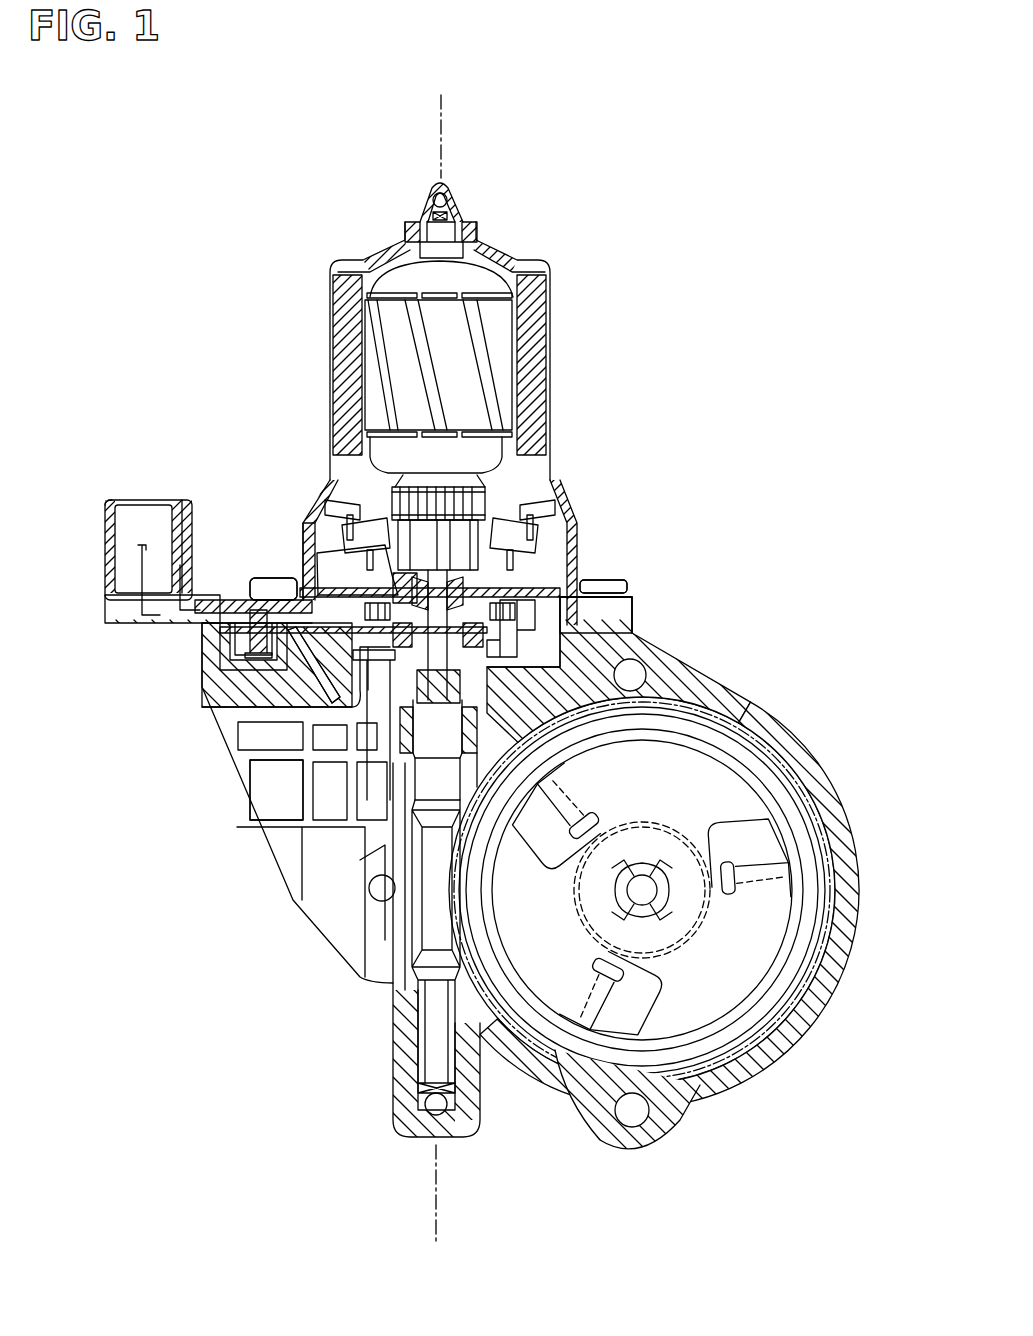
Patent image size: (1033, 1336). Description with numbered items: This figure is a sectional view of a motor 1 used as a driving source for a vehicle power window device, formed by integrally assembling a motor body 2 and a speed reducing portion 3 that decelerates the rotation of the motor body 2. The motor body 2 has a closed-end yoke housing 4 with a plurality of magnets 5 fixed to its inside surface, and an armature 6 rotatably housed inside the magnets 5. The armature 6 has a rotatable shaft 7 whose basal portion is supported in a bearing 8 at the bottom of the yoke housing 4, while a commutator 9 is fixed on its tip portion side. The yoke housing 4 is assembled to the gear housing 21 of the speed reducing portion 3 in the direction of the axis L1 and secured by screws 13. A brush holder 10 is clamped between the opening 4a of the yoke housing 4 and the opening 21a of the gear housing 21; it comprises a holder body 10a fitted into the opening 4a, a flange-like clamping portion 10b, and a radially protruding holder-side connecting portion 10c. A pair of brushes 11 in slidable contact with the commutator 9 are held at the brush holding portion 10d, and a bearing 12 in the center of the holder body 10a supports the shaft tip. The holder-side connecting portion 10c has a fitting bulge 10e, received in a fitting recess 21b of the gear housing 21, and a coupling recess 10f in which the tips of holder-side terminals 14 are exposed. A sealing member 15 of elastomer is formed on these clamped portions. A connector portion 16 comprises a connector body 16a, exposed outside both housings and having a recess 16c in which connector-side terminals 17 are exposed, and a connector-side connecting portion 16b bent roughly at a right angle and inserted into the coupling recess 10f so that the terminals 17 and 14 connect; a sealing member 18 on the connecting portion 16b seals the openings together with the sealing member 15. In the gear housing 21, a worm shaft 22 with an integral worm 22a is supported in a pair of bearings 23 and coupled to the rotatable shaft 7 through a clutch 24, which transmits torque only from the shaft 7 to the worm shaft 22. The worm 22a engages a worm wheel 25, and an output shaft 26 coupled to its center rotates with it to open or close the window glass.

The motor 1 is at (668, 222).
The motor body 2 is at (541, 246).
The speed reducing portion 3 is at (749, 684).
The yoke housing 4 is at (552, 296).
The opening of the yoke housing 4a is at (305, 570).
The magnets 5 is at (340, 330).
The armature 6 is at (505, 350).
The rotatable shaft 7 is at (437, 615).
The bearing 8 is at (455, 222).
The commutator 9 is at (455, 495).
The brush holder 10 is at (520, 585).
The holder body 10a is at (548, 540).
The clamping portion 10b is at (600, 575).
The holder-side connecting portion 10c is at (240, 655).
The brush holding portion 10d is at (330, 508).
The fitting bulge 10e is at (276, 790).
The coupling recess 10f is at (245, 625).
The brushes 11 is at (375, 520).
The bearing 12 is at (438, 545).
The screws 13 is at (258, 580).
The holder-side terminals 14 is at (262, 700).
The sealing member 15 is at (262, 590).
The connector portion 16 is at (189, 490).
The connector body 16a is at (100, 605).
The connector-side connecting portion 16b is at (240, 680).
The recess 16c is at (122, 505).
The connector-side terminals 17 is at (140, 548).
The sealing member 18 is at (225, 598).
The gear housing 21 is at (290, 858).
The opening of the gear housing 21a is at (580, 612).
The fitting recess 21b is at (225, 665).
The worm shaft 22 is at (420, 1010).
The worm 22a is at (395, 855).
The bearings 23 is at (405, 735).
The clutch 24 is at (490, 598).
The worm wheel 25 is at (770, 735).
The output shaft 26 is at (642, 905).
The axis L1 is at (441, 112).